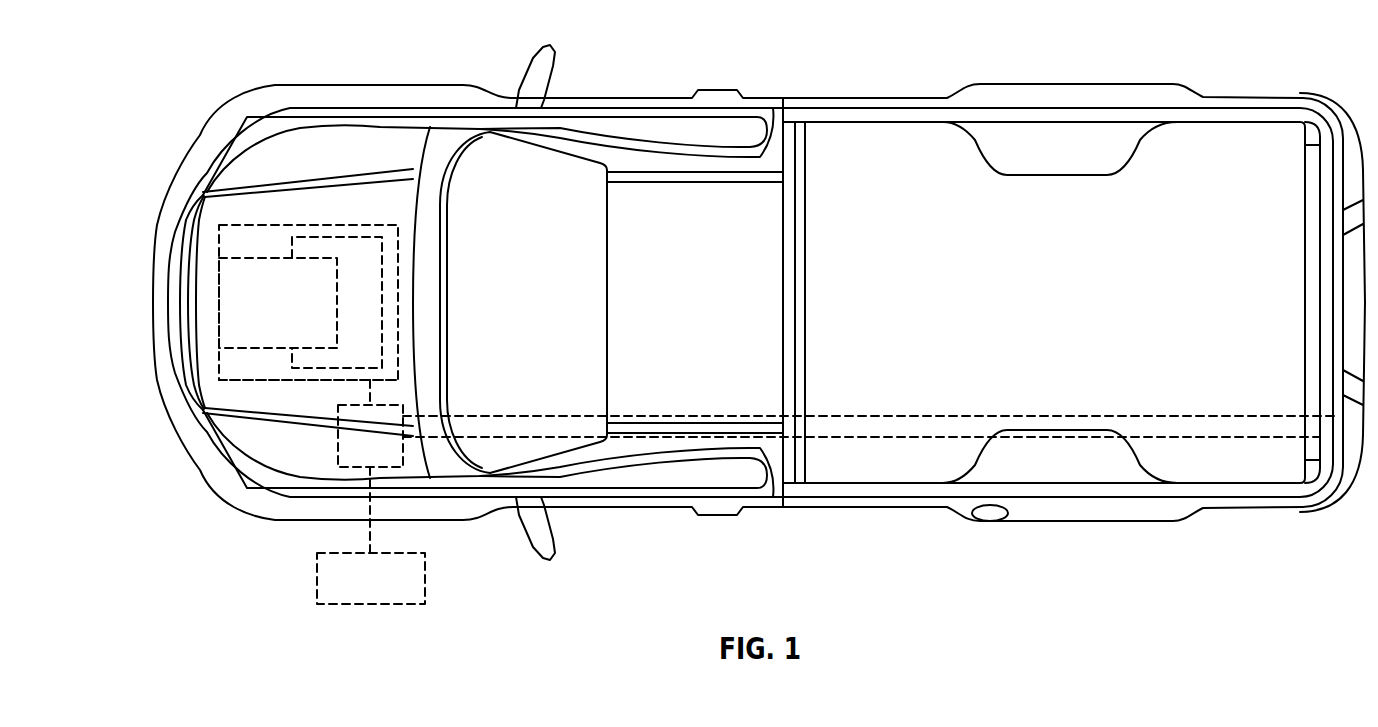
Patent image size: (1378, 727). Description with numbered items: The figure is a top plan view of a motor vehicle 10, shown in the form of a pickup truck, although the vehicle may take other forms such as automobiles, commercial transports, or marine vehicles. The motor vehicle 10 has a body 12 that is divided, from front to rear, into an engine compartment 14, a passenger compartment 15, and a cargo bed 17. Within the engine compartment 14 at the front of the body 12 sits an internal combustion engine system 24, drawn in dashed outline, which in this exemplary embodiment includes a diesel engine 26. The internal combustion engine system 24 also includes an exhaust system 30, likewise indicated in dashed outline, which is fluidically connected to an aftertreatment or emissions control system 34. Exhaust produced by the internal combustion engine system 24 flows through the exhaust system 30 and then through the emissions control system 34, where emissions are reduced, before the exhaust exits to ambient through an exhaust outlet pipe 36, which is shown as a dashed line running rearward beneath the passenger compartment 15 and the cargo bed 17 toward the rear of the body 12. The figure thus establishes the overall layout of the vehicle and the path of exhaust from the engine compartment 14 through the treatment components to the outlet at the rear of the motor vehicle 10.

The motor vehicle 10 is at (1062, 560).
The body 12 is at (837, 512).
The engine compartment 14 is at (340, 164).
The passenger compartment 15 is at (507, 186).
The cargo bed 17 is at (872, 183).
The internal combustion engine system 24 is at (266, 303).
The diesel engine 26 is at (240, 242).
The exhaust system 30 is at (261, 391).
The emissions control system 34 is at (312, 447).
The exhaust outlet pipe 36 is at (1227, 447).